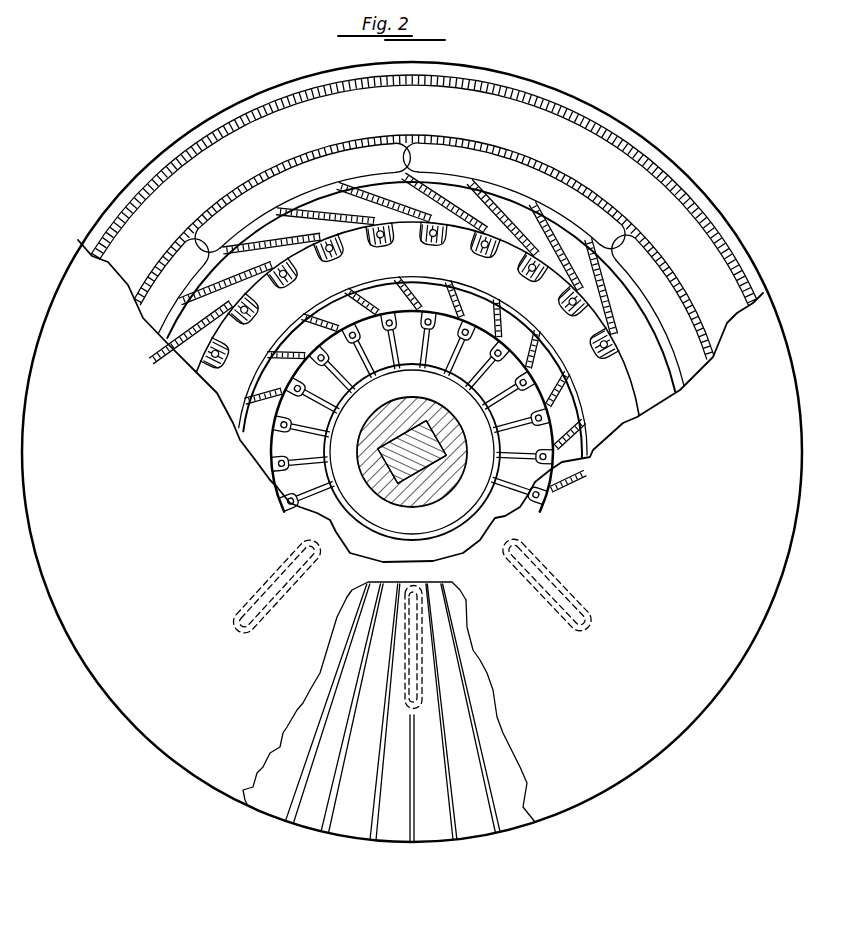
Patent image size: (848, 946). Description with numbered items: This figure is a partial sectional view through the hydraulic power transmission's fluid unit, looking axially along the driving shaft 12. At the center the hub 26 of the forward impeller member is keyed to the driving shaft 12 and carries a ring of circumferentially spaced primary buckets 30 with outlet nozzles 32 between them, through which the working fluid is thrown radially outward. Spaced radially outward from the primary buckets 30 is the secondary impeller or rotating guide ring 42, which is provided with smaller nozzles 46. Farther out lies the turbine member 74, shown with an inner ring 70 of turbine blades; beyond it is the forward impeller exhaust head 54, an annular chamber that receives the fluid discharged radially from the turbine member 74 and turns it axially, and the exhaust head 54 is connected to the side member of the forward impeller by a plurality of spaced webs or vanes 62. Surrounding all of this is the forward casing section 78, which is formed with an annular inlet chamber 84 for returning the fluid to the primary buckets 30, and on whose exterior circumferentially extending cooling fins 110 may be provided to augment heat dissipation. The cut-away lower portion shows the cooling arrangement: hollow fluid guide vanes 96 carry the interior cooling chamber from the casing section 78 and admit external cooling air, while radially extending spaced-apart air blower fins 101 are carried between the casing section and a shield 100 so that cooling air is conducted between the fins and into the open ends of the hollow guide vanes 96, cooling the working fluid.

The driving shaft 12 is at (412, 452).
The hub 26 is at (450, 430).
The primary buckets 30 is at (326, 401).
The outlet nozzles 32 is at (330, 354).
The secondary impeller or rotating guide ring 42 is at (409, 296).
The smaller nozzles 46 is at (298, 253).
The forward impeller exhaust head 54 is at (318, 146).
The webs or vanes 62 is at (418, 163).
The inner ring 70 is at (370, 301).
The turbine member 74 is at (278, 224).
The forward casing section 78 is at (567, 114).
The annular inlet chamber 84 is at (418, 531).
The hollow fluid guide vanes 96 is at (236, 634).
The shield 100 is at (688, 724).
The air blower fins 101 is at (292, 838).
The circumferentially extending cooling fins 110 is at (490, 76).